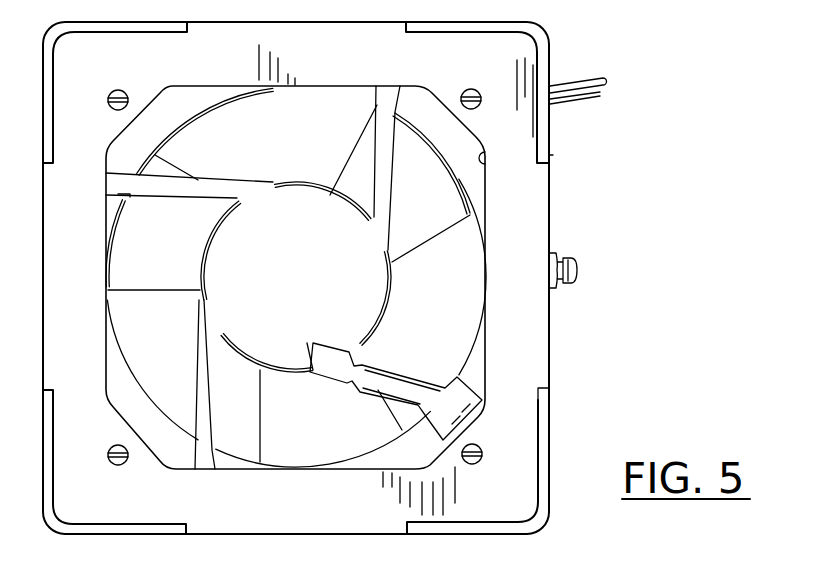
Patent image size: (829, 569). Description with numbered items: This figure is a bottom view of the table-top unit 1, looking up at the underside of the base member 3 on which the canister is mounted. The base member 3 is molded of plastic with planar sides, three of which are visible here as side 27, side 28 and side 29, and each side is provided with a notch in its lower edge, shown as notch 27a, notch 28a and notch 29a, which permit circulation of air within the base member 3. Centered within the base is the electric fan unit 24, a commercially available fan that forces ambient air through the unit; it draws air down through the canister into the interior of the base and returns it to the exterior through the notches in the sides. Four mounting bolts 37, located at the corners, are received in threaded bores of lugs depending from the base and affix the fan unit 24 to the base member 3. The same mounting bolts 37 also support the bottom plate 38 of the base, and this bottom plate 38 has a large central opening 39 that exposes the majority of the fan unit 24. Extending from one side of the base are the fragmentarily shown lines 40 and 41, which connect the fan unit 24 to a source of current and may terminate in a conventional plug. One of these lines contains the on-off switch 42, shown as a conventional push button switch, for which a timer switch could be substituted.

The unit 1 is at (549, 155).
The base member 3 is at (548, 45).
The electric fan unit 24 is at (393, 285).
The planar side 27 is at (552, 134).
The notch 27a is at (551, 380).
The planar side 28 is at (478, 533).
The notch 28a is at (405, 530).
The planar side 29 is at (43, 100).
The notch 29a is at (50, 163).
The mounting bolts 37 is at (126, 93).
The bottom plate 38 is at (527, 331).
The central opening 39 is at (487, 161).
The line 40 is at (604, 80).
The line 41 is at (598, 95).
The on-off switch 42 is at (578, 264).